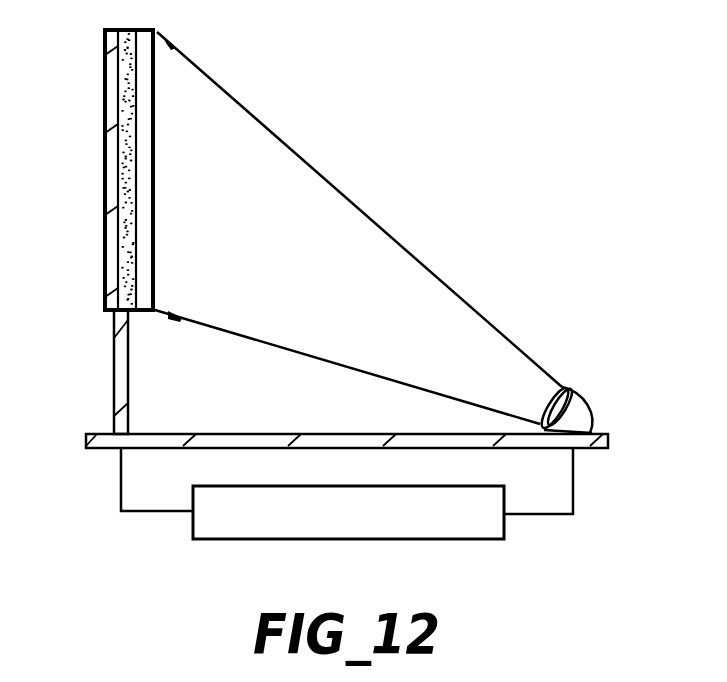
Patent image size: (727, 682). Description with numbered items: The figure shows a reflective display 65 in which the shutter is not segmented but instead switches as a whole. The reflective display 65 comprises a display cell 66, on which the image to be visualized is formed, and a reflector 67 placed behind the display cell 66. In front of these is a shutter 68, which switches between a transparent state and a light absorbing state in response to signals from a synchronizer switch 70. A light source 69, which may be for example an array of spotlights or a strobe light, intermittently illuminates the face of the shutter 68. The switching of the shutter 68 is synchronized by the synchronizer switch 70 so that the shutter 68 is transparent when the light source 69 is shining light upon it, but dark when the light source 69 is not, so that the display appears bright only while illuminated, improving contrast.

The reflective display 65 is at (593, 452).
The display cell 66 is at (127, 260).
The reflector 67 is at (112, 80).
The shutter 68 is at (148, 205).
The light source 69 is at (587, 402).
The synchronizer switch 70 is at (193, 530).